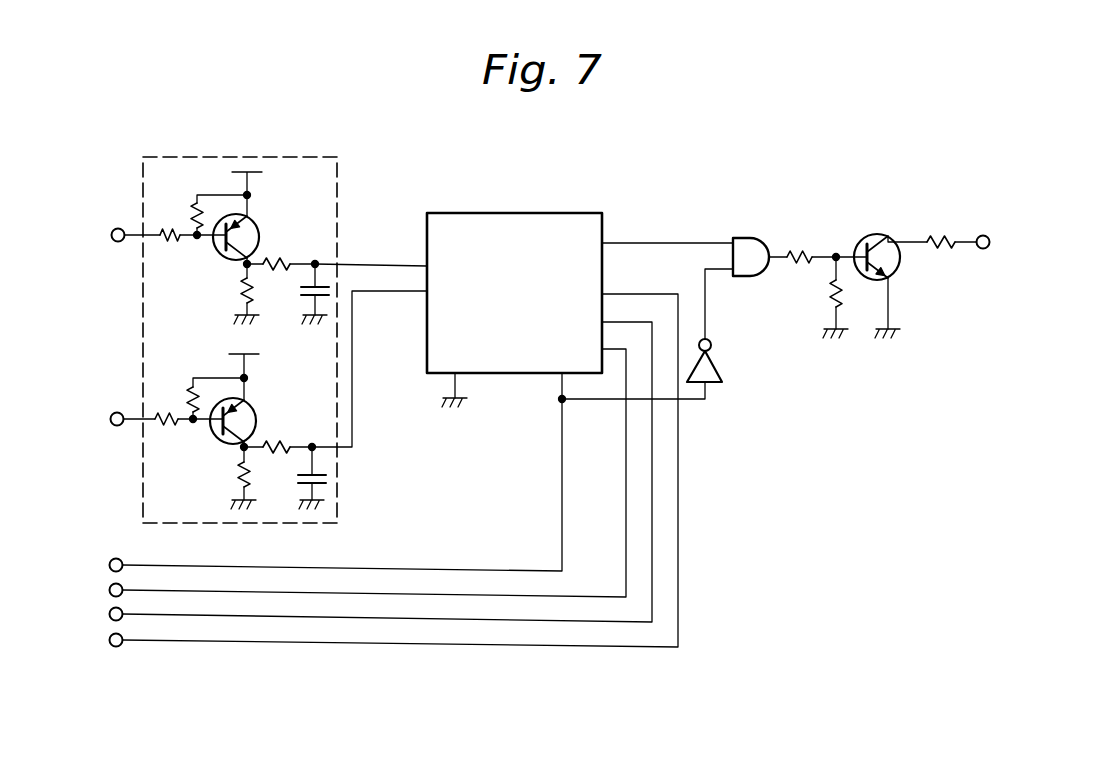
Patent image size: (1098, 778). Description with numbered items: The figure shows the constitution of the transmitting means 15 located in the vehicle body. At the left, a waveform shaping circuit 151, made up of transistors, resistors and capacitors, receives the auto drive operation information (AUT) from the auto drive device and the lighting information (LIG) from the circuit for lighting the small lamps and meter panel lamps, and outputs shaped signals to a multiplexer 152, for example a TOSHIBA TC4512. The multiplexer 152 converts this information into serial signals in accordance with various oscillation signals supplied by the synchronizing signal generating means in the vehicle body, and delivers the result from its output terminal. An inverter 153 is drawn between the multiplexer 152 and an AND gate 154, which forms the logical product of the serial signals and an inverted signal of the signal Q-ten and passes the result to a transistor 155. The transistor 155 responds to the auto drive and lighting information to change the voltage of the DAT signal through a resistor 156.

The transmitting means 15 is at (233, 110).
The waveform shaping circuit 151 is at (296, 157).
The multiplexer 152 is at (580, 213).
The inverter 153 is at (724, 371).
The AND gate 154 is at (751, 236).
The transistor 155 is at (878, 233).
The resistor 156 is at (951, 234).